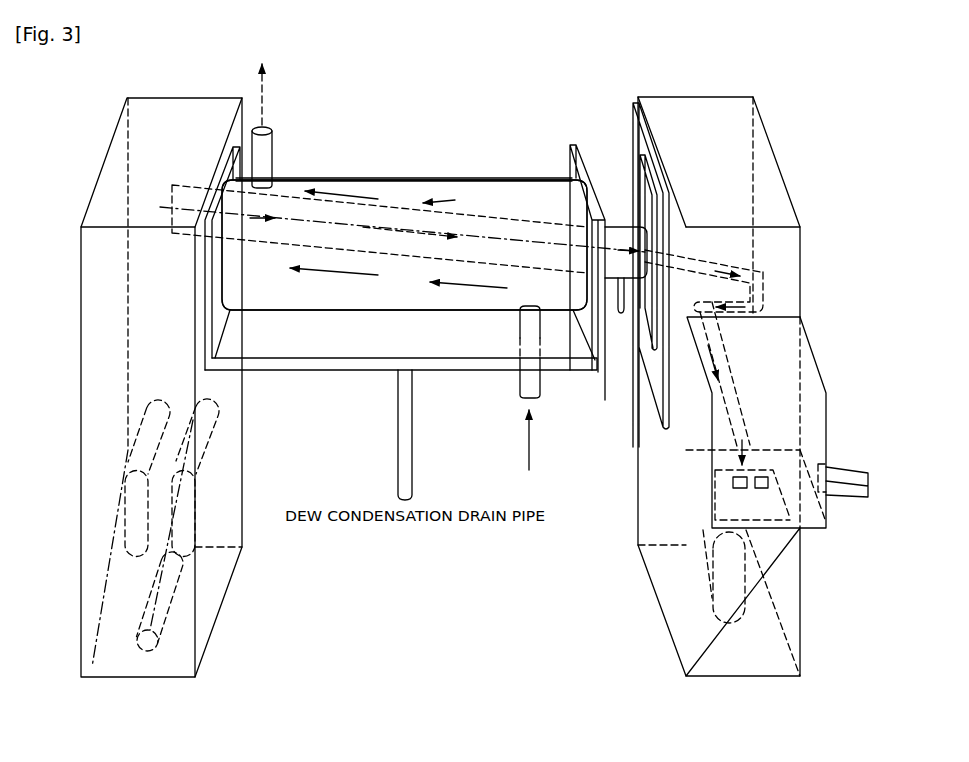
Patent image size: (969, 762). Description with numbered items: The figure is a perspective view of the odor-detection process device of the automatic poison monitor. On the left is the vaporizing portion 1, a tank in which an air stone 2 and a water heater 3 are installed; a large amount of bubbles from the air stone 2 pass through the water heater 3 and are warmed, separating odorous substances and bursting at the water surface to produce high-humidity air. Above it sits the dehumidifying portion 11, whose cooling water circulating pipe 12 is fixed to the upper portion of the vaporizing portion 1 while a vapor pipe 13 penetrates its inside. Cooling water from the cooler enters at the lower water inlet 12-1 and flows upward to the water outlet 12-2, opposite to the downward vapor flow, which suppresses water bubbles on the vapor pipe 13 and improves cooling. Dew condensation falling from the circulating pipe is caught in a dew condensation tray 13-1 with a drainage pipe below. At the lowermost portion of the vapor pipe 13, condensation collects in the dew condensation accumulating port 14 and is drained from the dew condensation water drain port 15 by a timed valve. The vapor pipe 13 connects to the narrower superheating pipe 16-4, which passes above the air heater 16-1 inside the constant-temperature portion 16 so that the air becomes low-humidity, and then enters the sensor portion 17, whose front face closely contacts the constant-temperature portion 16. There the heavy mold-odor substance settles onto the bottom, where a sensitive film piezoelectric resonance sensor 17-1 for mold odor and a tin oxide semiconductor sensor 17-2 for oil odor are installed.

The vaporizing portion 1 is at (223, 597).
The air stone 2 is at (148, 597).
The water heater 3 is at (138, 442).
The dehumidifying portion 11 is at (420, 166).
The cooling water circulating pipe 12 is at (458, 180).
The water inlet 12-1 is at (520, 372).
The water outlet 12-2 is at (273, 143).
The vapor pipe 13 is at (393, 207).
The dew condensation tray 13-1 is at (352, 372).
The dew condensation accumulating port 14 is at (632, 277).
The dew condensation water drain port 15 is at (622, 320).
The constant-temperature portion 16 is at (662, 615).
The air heater 16-1 is at (700, 568).
The superheating pipe 16-4 is at (763, 292).
The sensor portion 17 is at (818, 348).
The sensitive film piezoelectric resonance sensor 17-1 is at (773, 507).
The tin oxide semiconductor sensor 17-2 is at (842, 467).